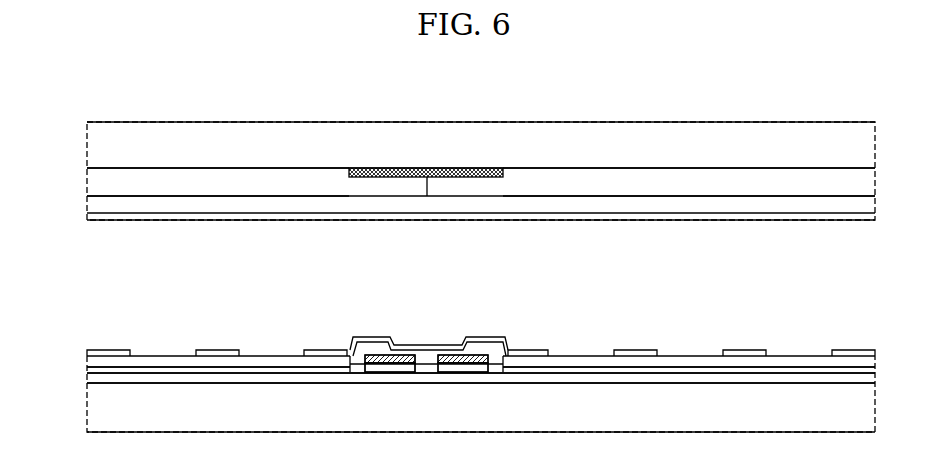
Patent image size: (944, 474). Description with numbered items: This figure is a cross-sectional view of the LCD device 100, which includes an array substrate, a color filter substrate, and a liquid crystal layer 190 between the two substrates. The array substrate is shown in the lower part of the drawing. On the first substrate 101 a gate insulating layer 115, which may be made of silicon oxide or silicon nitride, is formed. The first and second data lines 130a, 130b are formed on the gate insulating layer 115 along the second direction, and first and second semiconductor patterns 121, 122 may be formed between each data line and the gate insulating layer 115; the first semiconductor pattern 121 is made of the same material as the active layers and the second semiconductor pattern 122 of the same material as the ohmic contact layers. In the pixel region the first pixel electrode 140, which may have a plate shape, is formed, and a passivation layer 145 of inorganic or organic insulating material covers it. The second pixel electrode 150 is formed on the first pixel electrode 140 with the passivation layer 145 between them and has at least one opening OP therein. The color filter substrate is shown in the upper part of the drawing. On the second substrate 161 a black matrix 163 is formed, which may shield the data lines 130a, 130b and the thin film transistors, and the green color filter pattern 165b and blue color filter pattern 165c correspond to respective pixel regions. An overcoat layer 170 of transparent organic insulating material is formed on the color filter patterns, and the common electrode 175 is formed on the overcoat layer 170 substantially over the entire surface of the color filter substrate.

The LCD device 100 is at (797, 100).
The liquid crystal layer 190 is at (116, 254).
The second substrate 161 is at (861, 145).
The green color filter pattern 165b is at (253, 180).
The black matrix 163 is at (400, 168).
The blue color filter pattern 165c is at (627, 178).
The overcoat layer 170 is at (550, 200).
The common electrode 175 is at (720, 214).
The first substrate 101 is at (869, 419).
The gate insulating layer 115 is at (564, 380).
The first pixel electrode 140 is at (157, 369).
The passivation layer 145 is at (693, 368).
The second pixel electrode 150 is at (108, 351).
The opening OP is at (165, 348).
The second data line 130b is at (393, 355).
The first data line 130a is at (452, 355).
The first semiconductor pattern 121 is at (377, 372).
The second semiconductor pattern 122 is at (400, 363).